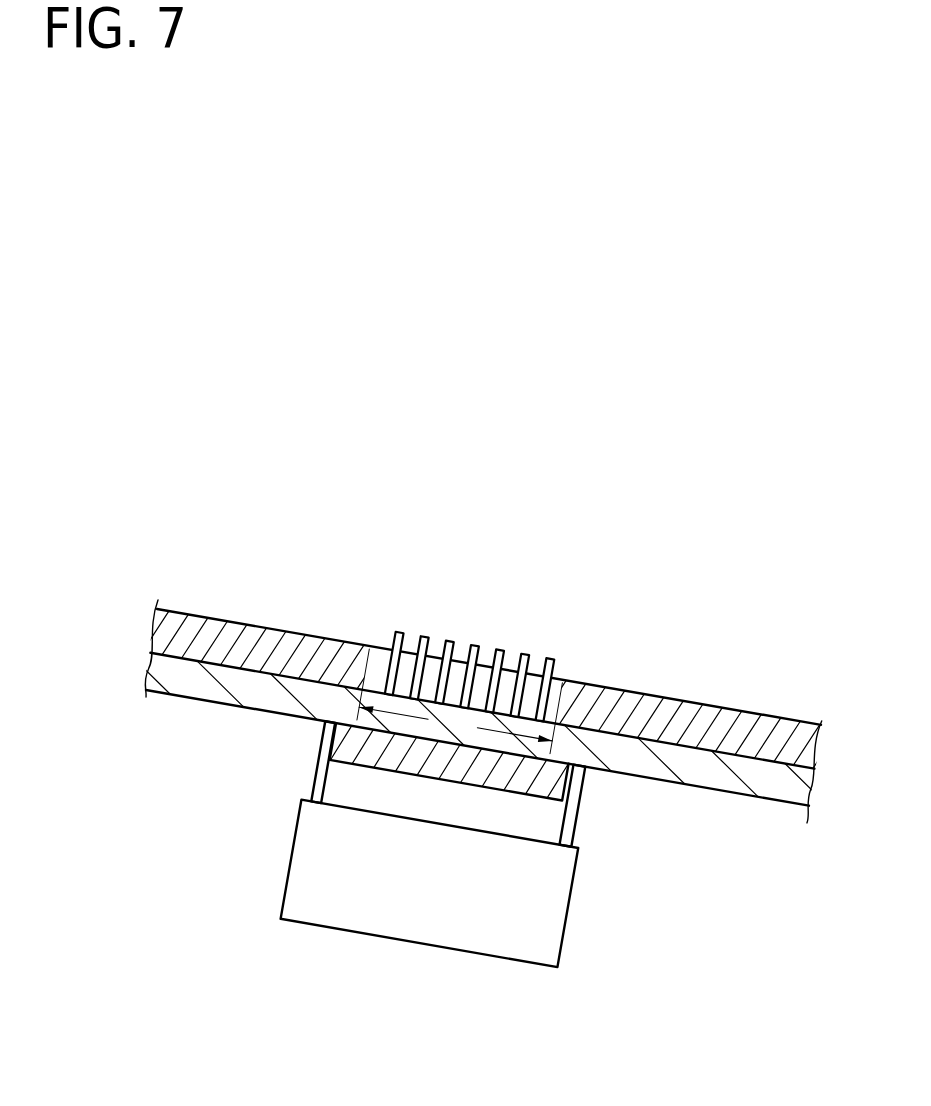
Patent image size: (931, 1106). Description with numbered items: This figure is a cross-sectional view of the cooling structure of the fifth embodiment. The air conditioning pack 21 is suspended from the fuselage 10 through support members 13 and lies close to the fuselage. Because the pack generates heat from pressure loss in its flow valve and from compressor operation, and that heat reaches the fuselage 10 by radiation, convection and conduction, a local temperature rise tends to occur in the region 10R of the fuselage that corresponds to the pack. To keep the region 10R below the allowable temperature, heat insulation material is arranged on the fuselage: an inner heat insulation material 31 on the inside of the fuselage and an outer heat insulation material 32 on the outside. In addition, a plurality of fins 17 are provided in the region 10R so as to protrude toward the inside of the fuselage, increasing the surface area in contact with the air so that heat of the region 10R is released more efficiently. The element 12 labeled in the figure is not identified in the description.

The fuselage 10 is at (488, 667).
The region of the fuselage 10R is at (459, 701).
The heat sink 12 is at (491, 610).
The support member 13 is at (313, 775).
The fin 17 is at (525, 653).
The air conditioning pack 21 is at (287, 875).
The inner heat insulation material 31 is at (685, 700).
The outer heat insulation material 32 is at (523, 797).